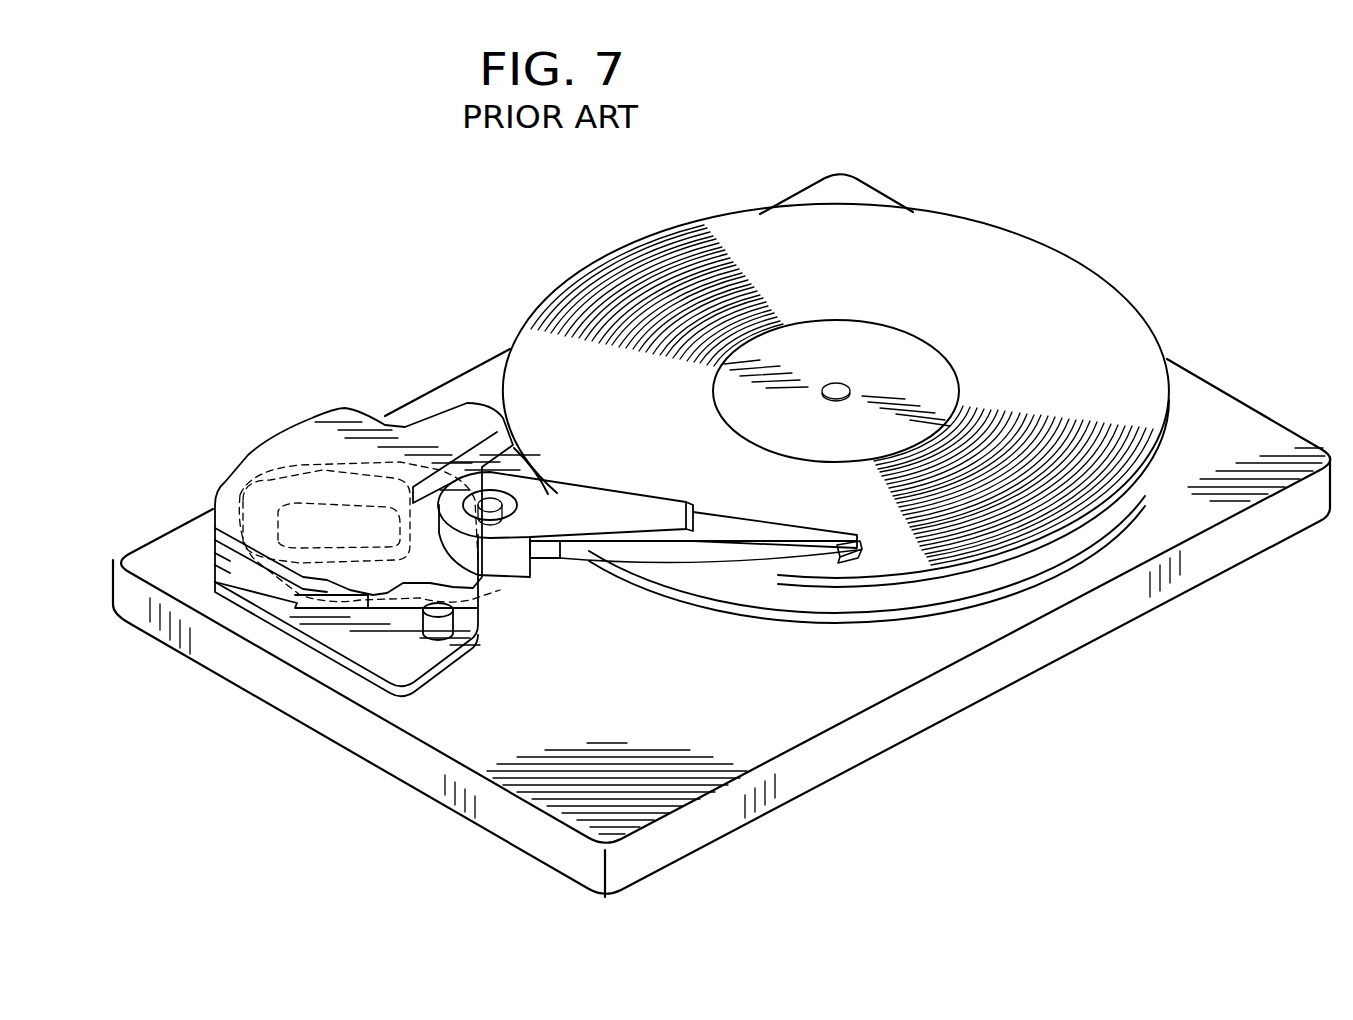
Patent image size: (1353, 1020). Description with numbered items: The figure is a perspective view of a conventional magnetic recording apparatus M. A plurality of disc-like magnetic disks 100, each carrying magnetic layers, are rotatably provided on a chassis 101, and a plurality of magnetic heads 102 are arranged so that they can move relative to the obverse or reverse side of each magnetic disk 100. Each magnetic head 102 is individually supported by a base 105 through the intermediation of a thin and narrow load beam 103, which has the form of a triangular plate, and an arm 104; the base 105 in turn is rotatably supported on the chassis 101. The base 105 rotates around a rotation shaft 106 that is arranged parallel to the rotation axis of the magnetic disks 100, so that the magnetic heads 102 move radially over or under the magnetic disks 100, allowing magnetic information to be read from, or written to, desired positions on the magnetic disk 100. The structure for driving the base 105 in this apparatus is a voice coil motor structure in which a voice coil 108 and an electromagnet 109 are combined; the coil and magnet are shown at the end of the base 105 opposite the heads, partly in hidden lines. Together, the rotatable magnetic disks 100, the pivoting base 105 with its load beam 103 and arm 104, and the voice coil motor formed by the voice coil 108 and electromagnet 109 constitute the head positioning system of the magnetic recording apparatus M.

The magnetic disk 100 is at (979, 262).
The magnetic recording apparatus M is at (1124, 270).
The chassis 101 is at (1242, 542).
The magnetic head 102 is at (845, 560).
The load beam 103 is at (740, 535).
The arm 104 is at (620, 575).
The base 105 is at (553, 490).
The rotation shaft 106 is at (493, 515).
The voice coil 108 is at (272, 498).
The electromagnet 109 is at (355, 478).